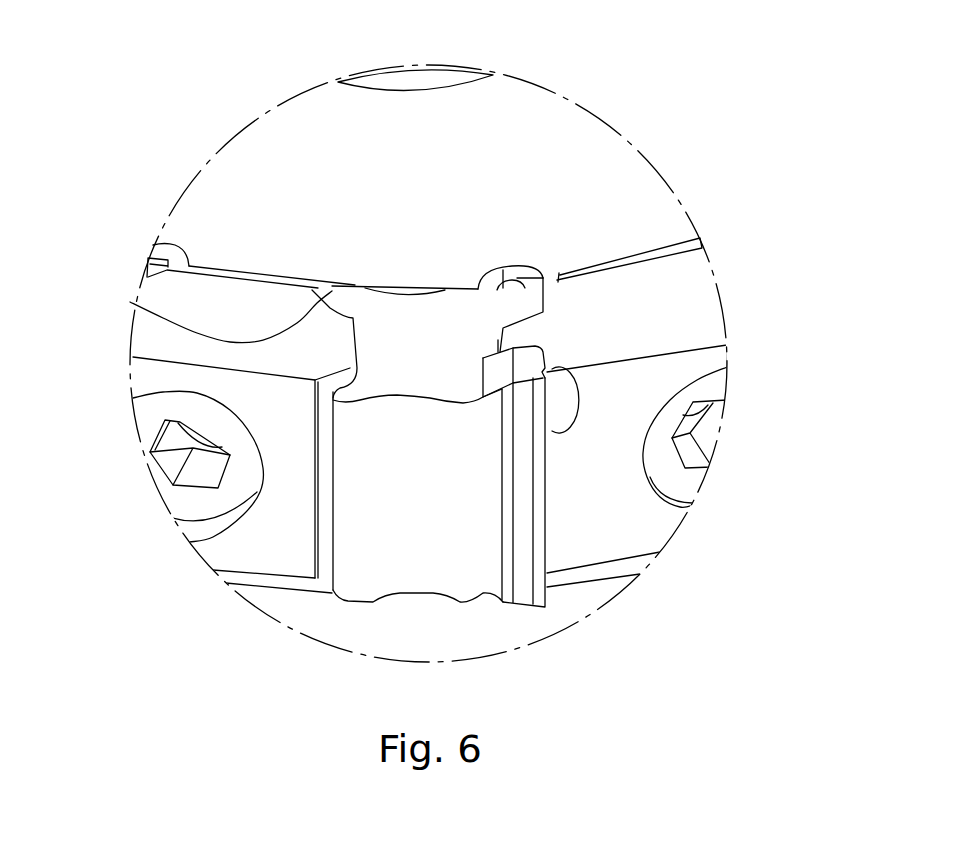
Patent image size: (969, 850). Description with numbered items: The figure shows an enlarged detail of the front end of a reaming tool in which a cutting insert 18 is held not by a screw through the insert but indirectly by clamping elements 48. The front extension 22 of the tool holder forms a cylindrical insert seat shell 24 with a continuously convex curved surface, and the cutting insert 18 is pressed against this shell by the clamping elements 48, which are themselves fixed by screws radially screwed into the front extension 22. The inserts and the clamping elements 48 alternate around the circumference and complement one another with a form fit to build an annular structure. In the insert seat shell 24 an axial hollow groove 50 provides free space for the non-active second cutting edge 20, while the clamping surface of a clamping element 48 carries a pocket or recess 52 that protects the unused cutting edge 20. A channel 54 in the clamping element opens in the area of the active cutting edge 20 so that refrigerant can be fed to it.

The cutting insert 18 is at (373, 602).
The cutting edge 20 is at (560, 270).
The front extension 22 is at (560, 157).
The insert seat shell 24 is at (130, 302).
The clamping element 48 is at (277, 560).
The axial hollow groove 50 is at (540, 268).
The pocket or recess 52 is at (551, 299).
The channel 54 is at (553, 393).